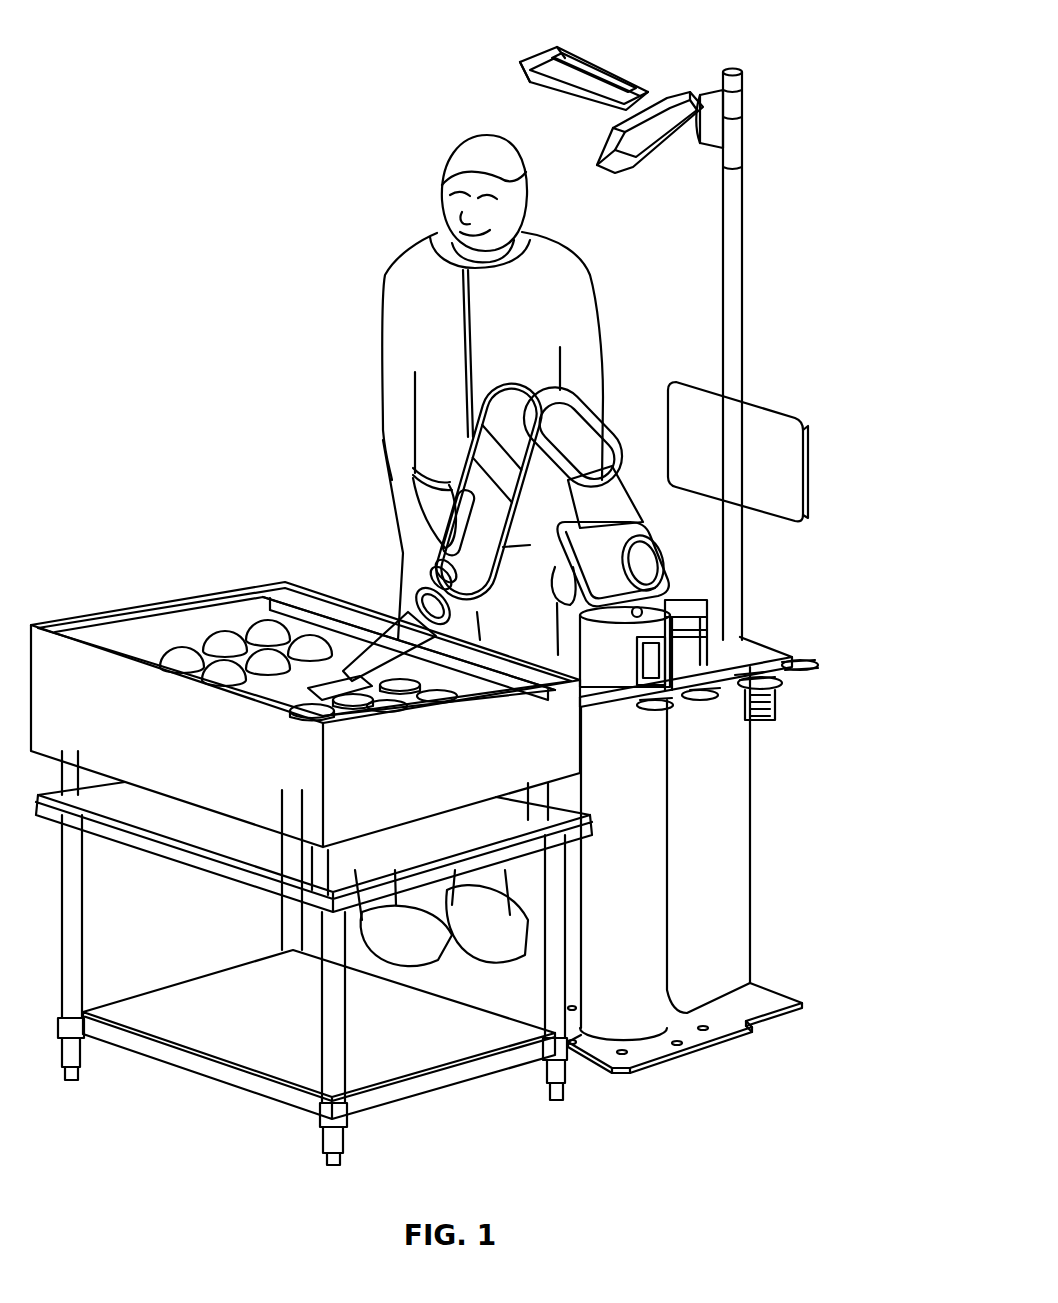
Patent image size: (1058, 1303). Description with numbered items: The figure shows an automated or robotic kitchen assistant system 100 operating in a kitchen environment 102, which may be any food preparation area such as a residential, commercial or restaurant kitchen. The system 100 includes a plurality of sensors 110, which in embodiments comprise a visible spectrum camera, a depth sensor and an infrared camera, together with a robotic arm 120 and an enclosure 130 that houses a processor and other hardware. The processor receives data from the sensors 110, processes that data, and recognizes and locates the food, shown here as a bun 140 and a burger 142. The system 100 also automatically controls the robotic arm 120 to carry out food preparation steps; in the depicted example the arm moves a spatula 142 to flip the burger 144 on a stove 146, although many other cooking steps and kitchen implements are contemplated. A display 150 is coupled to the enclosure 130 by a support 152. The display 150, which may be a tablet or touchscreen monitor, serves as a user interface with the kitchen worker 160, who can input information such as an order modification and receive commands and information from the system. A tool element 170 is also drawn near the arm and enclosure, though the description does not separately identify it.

The automated kitchen assistant system 100 is at (822, 688).
The kitchen environment 102 is at (158, 90).
The sensors 110 is at (622, 42).
The robotic arm 120 is at (462, 468).
The enclosure 130 is at (752, 808).
The food 140 is at (222, 645).
The spatula 142 is at (368, 676).
The burger 144 is at (306, 710).
The stove 146 is at (545, 725).
The display 150 is at (806, 468).
The support 152 is at (742, 280).
The kitchen worker 160 is at (452, 158).
The tool changer / utensils 170 is at (800, 660).